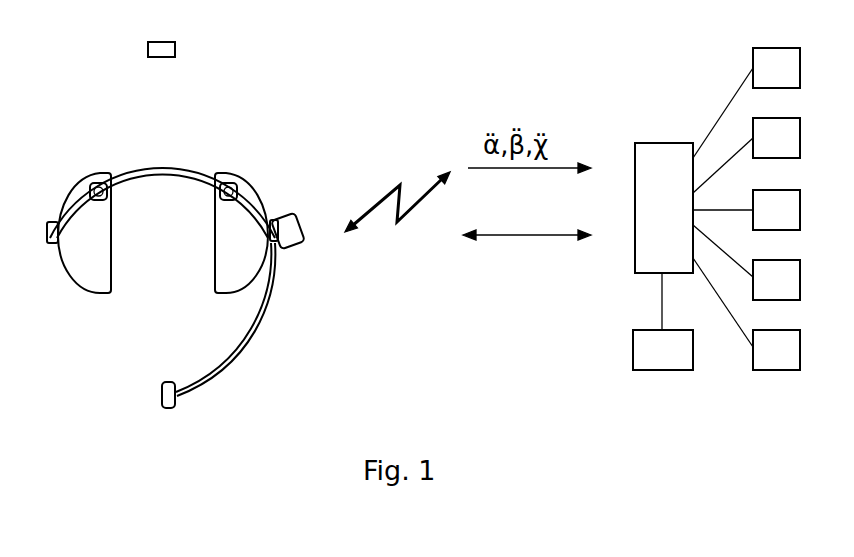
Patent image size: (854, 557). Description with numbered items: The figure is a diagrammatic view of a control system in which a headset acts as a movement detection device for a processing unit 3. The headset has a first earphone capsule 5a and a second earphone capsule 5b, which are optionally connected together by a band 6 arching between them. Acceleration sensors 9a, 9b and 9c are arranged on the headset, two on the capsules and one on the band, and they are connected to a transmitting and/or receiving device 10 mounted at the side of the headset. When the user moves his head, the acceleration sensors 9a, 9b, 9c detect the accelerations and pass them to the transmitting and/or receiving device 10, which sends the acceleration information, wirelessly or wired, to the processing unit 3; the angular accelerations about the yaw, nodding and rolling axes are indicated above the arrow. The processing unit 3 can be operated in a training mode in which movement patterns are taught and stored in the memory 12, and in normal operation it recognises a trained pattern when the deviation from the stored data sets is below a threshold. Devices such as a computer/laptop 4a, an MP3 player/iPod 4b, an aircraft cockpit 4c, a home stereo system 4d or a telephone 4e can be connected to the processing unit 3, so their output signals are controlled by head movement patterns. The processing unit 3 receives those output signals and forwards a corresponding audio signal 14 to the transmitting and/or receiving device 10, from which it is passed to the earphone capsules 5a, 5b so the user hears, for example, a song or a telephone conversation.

The processing unit 3 is at (664, 208).
The computer/laptop 4a is at (746, 103).
The MP3 player/iPod 4b is at (746, 155).
The aircraft cockpit 4c is at (746, 210).
The home stereo system 4d is at (746, 262).
The telephone 4e is at (746, 314).
The first earphone capsule 5a is at (87, 278).
The second earphone capsule 5b is at (222, 278).
The band 6 is at (102, 73).
The acceleration sensor 9a is at (99, 183).
The acceleration sensor 9b is at (226, 183).
The acceleration sensor 9c is at (172, 46).
The transmitting and/or receiving device 10 is at (292, 217).
The memory 12 is at (663, 321).
The audio signal 14 is at (527, 250).